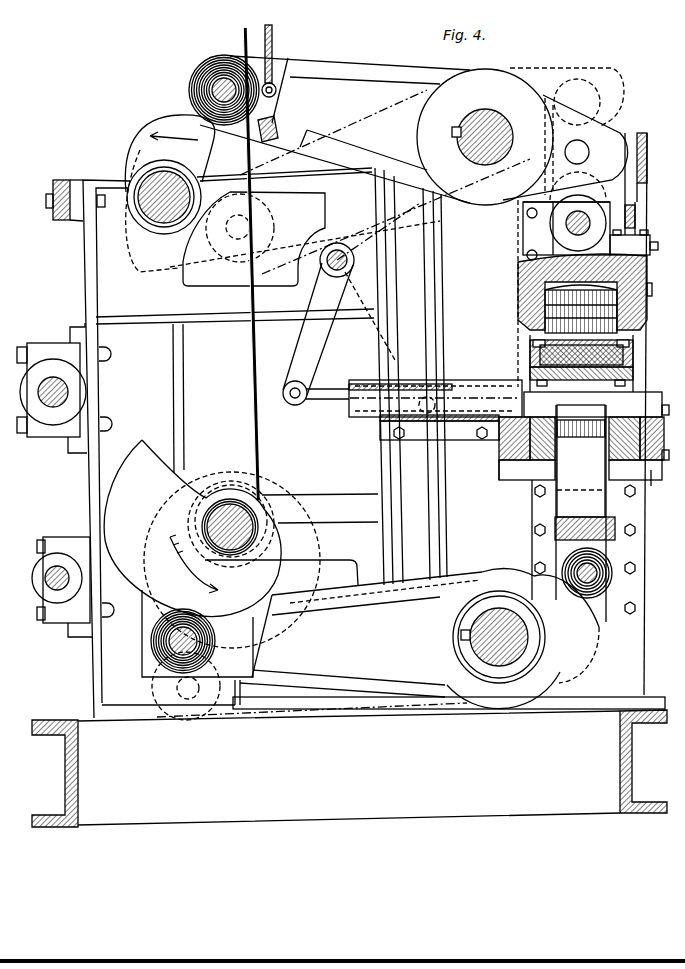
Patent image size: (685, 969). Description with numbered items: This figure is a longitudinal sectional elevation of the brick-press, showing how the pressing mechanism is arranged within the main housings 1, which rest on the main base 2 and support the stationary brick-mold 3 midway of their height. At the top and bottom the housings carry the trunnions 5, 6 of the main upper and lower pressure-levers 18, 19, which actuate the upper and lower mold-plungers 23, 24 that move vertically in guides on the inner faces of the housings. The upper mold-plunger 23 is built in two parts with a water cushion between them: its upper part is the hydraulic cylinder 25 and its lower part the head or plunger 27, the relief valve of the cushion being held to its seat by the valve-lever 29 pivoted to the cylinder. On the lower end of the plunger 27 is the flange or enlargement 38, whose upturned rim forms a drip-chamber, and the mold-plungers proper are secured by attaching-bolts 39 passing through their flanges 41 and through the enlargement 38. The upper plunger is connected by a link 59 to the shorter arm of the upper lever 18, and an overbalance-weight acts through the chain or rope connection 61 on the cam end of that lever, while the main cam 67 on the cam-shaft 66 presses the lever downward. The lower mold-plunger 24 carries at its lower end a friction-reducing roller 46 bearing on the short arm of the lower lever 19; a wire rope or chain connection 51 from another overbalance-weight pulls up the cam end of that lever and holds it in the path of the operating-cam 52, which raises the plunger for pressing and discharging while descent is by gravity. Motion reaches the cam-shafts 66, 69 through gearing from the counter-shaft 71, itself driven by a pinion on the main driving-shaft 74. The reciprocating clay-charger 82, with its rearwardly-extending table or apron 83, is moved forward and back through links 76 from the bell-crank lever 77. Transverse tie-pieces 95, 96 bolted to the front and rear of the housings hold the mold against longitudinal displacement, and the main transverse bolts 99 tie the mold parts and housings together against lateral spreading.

The main housings 1 is at (642, 545).
The main base 2 is at (349, 768).
The stationary brick-mold 3 is at (584, 437).
The trunnion 5 is at (485, 137).
The trunnion 6 is at (499, 637).
The main upper pressure-lever 18 is at (627, 123).
The main lower pressure-lever 19 is at (370, 644).
The upper mold-plunger 23 is at (598, 355).
The lower mold-plunger 24 is at (585, 472).
The hydraulic cylinder 25 is at (520, 290).
The hydraulic plunger 27 is at (581, 309).
The valve-lever 29 is at (636, 217).
The flange or enlargement 38 is at (530, 353).
The attaching-bolts 39 is at (633, 375).
The flanges 41 is at (633, 358).
The friction-reducing roller 46 is at (610, 578).
The wire rope or chain connection 51 is at (224, 264).
The operating-cam 52 is at (212, 544).
The link 59 is at (559, 218).
The chain or rope connection 61 is at (278, 61).
The cam-shaft 66 is at (164, 197).
The main cam 67 is at (133, 137).
The cam-shaft 69 is at (231, 524).
The counter-shaft 71 is at (52, 388).
The main driving-shaft 74 is at (62, 587).
The links 76 is at (327, 407).
The bell-crank lever 77 is at (318, 324).
The clay-charger 82 is at (469, 380).
The table or apron 83 is at (402, 384).
The transverse tie-piece 95 is at (656, 485).
The transverse tie-piece 96 is at (509, 467).
The main transverse bolts 99 is at (503, 445).